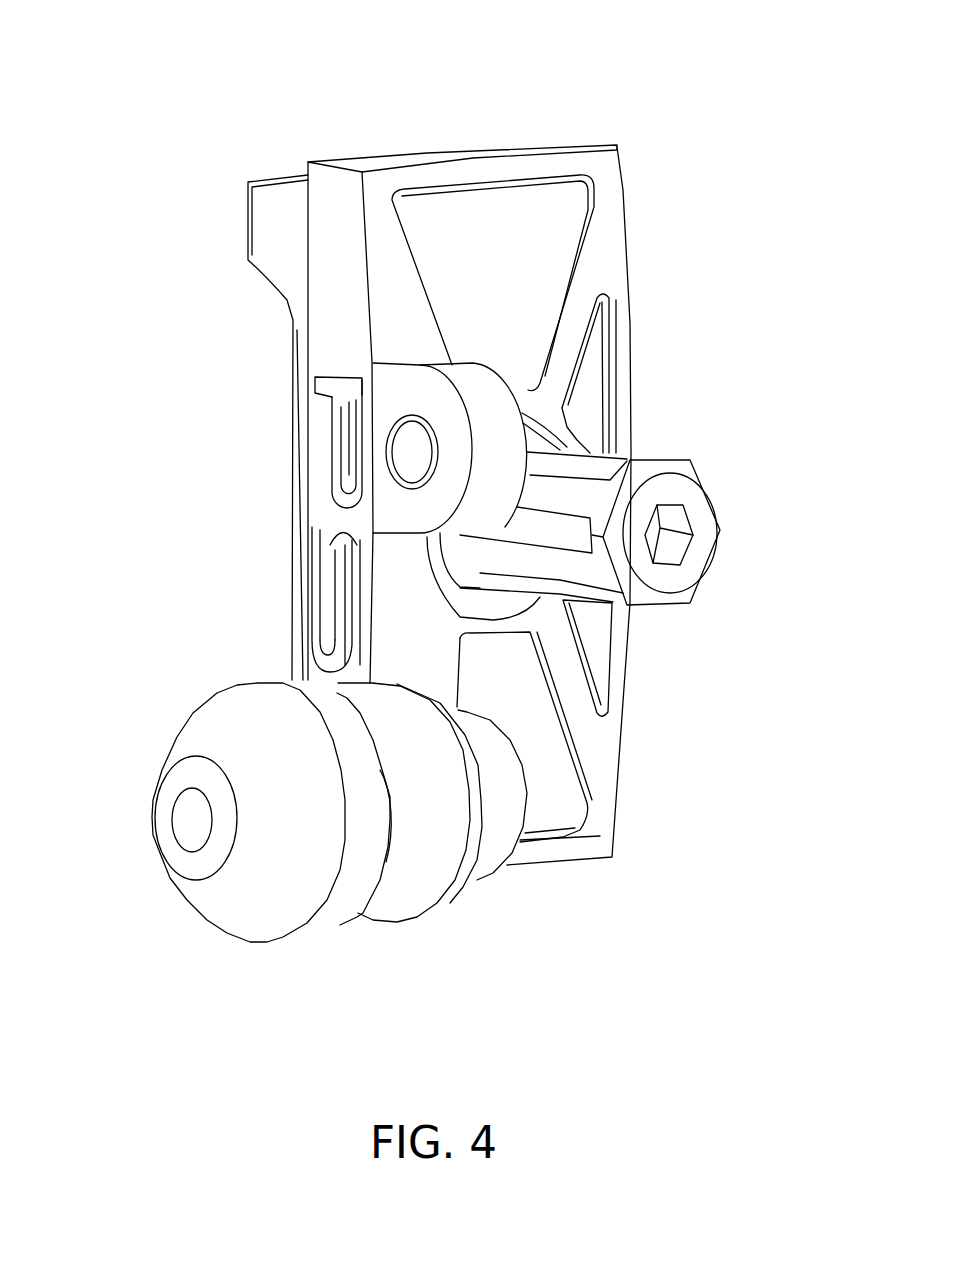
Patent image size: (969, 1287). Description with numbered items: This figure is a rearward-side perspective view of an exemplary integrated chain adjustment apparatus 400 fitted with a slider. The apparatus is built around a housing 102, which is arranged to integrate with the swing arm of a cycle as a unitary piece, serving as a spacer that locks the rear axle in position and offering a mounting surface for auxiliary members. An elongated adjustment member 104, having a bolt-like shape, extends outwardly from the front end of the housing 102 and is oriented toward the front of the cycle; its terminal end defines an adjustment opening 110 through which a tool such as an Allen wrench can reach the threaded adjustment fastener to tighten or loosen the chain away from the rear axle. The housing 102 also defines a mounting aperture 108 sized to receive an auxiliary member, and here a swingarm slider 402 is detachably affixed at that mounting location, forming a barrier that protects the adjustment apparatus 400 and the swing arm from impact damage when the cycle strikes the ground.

The integrated chain adjustment apparatus 400 is at (118, 105).
The housing 102 is at (452, 223).
The elongated adjustment member 104 is at (565, 460).
The mounting aperture 108 is at (400, 447).
The adjustment opening 110 is at (673, 547).
The swingarm slider 402 is at (342, 878).